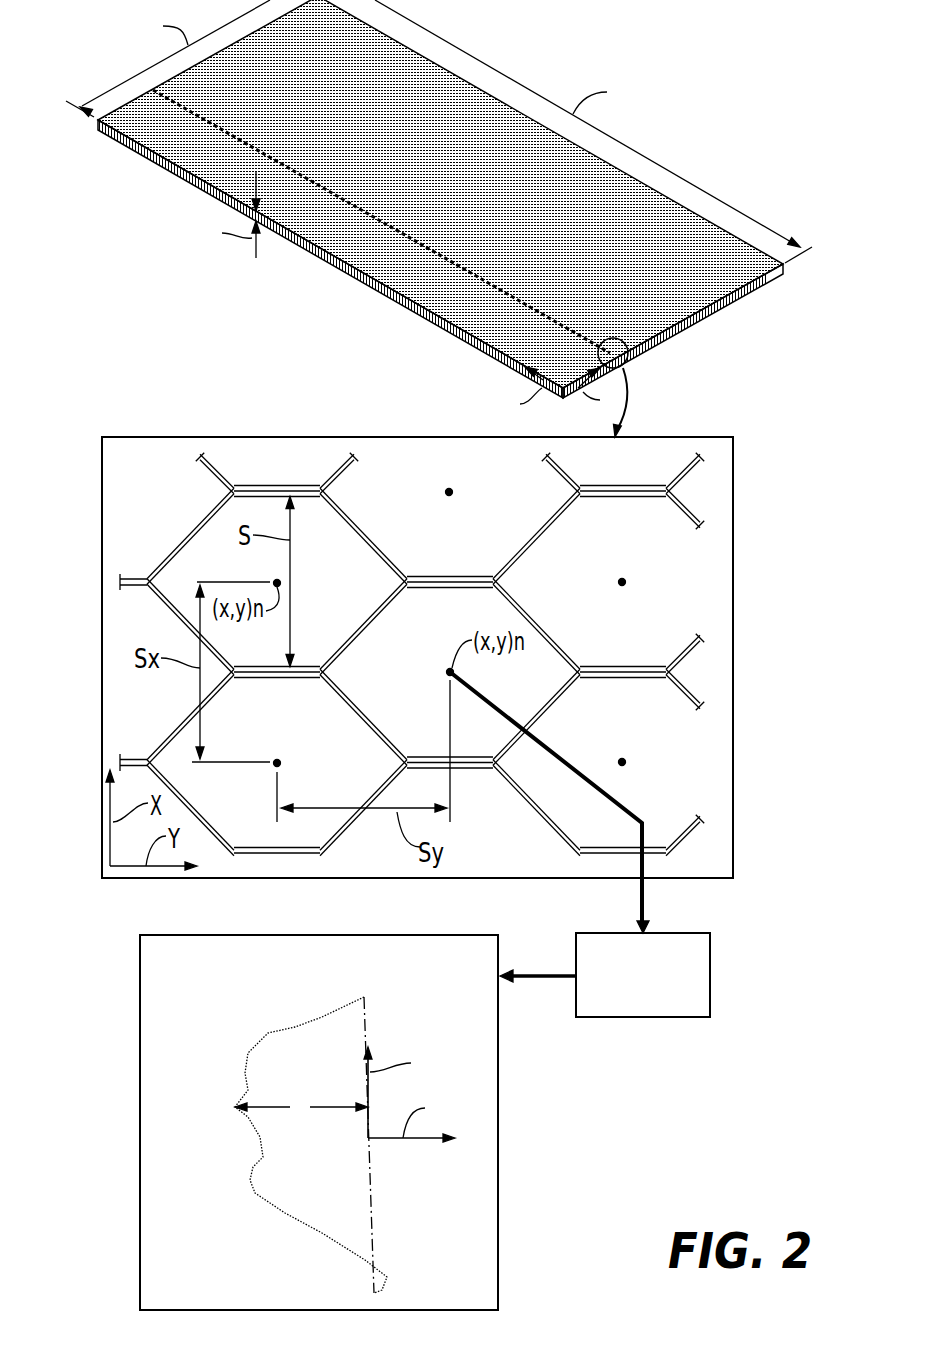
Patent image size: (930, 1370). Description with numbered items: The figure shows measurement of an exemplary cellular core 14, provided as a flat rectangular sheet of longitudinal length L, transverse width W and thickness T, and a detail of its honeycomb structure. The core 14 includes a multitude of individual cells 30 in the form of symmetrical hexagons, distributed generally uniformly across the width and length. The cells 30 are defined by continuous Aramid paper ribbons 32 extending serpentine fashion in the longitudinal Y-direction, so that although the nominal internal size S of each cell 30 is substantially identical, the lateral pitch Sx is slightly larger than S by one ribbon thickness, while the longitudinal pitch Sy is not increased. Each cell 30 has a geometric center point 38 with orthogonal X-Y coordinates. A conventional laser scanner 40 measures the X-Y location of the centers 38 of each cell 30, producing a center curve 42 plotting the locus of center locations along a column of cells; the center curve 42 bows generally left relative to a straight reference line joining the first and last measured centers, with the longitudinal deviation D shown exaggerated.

The cellular core 14 is at (355, 278).
The cells 30 is at (493, 526).
The ribbons 32 is at (565, 652).
The geometric center point 38 is at (279, 758).
The laser scanner 40 is at (712, 947).
The center curve 42 is at (292, 1025).